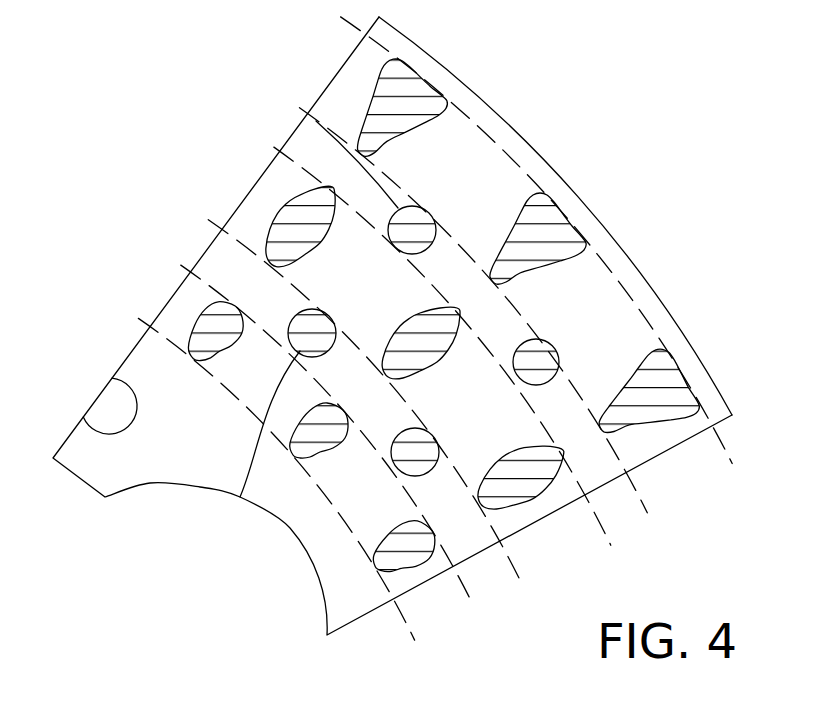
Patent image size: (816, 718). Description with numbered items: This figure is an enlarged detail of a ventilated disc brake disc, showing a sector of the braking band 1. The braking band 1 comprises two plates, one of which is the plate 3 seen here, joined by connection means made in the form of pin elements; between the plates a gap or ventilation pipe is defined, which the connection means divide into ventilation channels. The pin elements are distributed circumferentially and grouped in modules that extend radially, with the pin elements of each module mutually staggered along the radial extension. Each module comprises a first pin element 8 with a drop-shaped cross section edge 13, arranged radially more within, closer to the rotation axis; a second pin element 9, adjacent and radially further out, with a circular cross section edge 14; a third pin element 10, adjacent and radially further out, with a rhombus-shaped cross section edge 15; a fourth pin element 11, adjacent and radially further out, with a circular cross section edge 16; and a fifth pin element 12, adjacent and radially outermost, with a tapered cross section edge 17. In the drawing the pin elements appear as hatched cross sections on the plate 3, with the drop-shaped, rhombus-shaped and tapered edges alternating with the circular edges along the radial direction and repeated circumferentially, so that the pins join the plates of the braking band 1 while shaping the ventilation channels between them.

The braking band 1 is at (655, 330).
The plate 3 is at (605, 282).
The first pin element 8 is at (208, 327).
The second pin element 9 is at (240, 497).
The third pin element 10 is at (290, 217).
The fourth pin element 11 is at (316, 121).
The fifth pin element 12 is at (407, 93).
The drop-shaped cross section edge 13 is at (320, 453).
The circular cross section edge 14 is at (395, 455).
The rhombus-shaped cross section edge 15 is at (415, 332).
The circular cross section edge 16 is at (538, 345).
The tapered cross section edge 17 is at (530, 238).